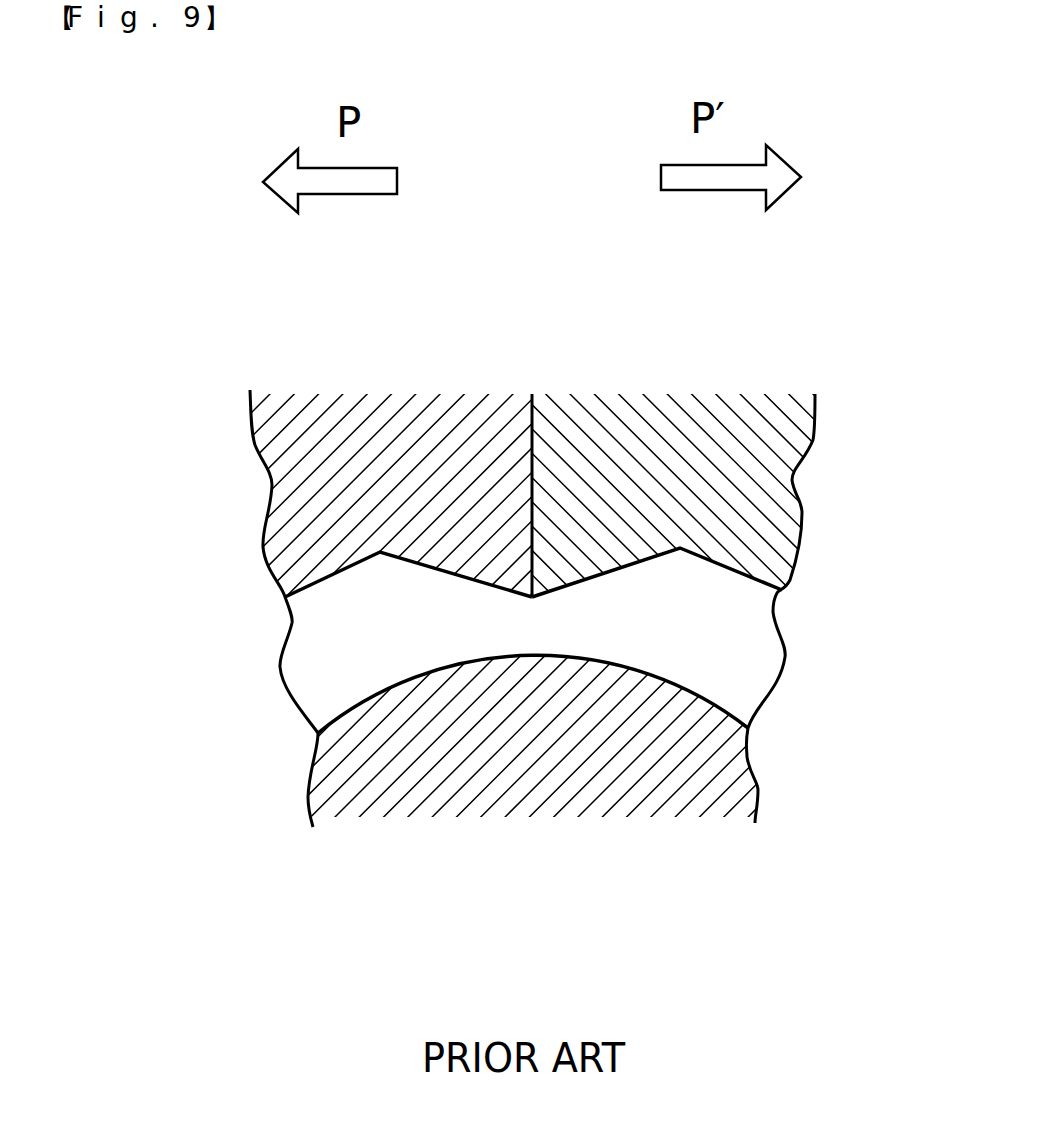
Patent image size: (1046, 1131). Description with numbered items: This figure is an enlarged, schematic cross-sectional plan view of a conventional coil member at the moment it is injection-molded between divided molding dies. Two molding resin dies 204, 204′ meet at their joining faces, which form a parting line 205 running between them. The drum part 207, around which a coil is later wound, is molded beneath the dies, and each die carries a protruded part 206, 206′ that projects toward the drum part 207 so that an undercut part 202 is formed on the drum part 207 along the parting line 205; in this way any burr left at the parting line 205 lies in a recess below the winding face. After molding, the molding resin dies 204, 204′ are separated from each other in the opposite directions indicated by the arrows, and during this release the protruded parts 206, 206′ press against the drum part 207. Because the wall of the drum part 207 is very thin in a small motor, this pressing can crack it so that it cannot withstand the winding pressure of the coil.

The undercut part 202 is at (425, 557).
The molding resin die 204 is at (450, 478).
The molding resin die 204′ is at (728, 473).
The parting line 205 is at (542, 463).
The protruded part 206 is at (502, 563).
The protruded part 206′ is at (557, 567).
The drum part 207 is at (342, 615).